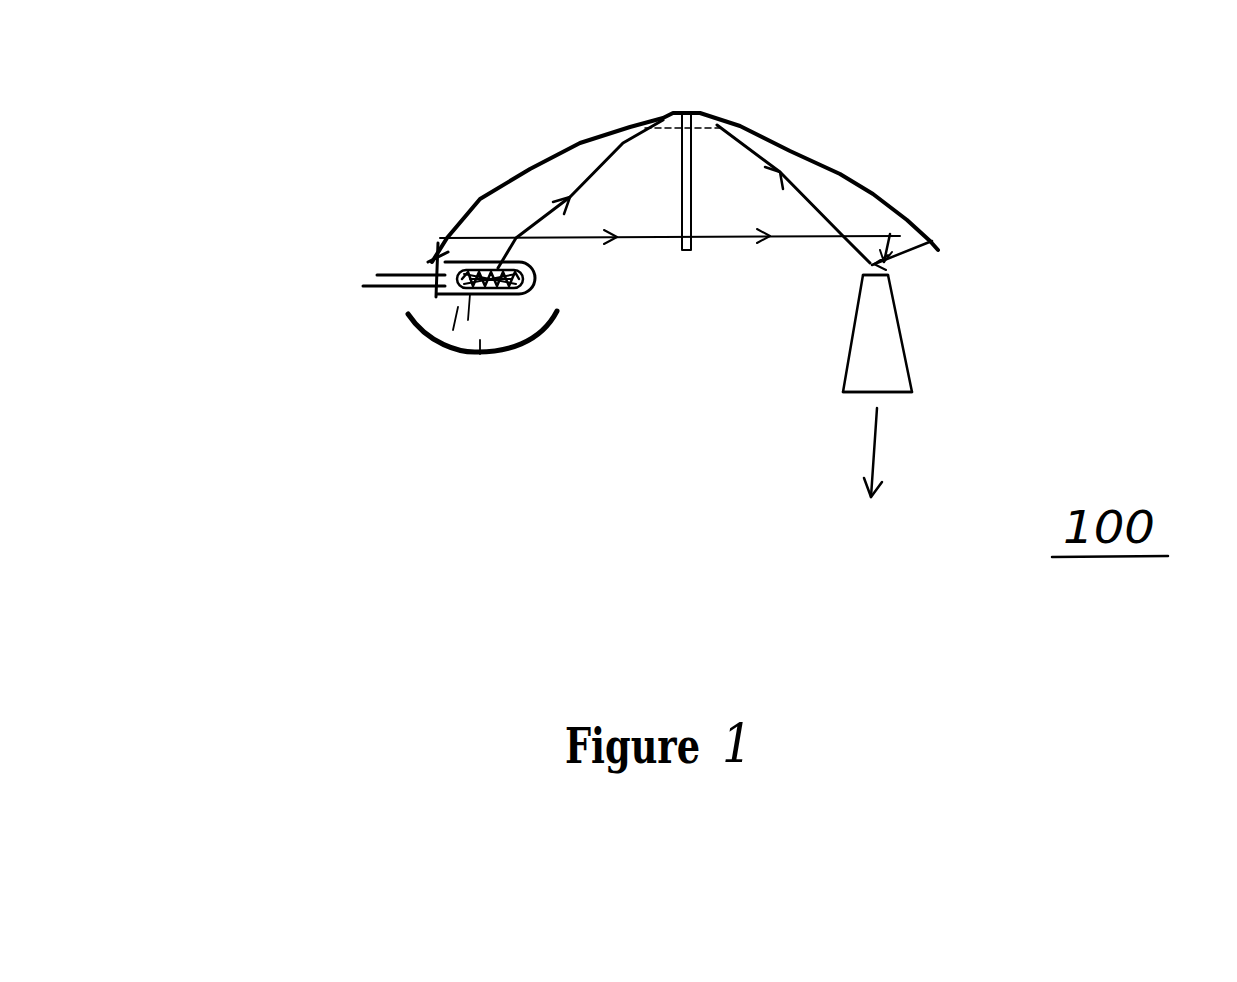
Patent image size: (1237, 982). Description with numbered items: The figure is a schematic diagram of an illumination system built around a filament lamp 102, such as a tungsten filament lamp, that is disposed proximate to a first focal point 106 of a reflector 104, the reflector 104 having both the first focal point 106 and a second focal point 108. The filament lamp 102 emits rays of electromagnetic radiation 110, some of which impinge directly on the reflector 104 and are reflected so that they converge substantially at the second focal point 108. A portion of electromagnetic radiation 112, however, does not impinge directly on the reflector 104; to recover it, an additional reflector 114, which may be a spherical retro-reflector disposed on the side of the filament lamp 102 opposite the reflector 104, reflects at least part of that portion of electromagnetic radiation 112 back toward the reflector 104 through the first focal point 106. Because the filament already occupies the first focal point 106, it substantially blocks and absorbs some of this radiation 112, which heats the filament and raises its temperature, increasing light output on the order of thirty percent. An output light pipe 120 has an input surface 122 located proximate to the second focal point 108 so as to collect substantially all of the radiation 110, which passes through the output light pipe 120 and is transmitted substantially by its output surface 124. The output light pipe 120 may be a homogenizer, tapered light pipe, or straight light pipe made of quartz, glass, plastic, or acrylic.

The filament lamp 102 is at (485, 283).
The reflector 104 is at (763, 106).
The first focal point 106 is at (483, 272).
The second focal point 108 is at (897, 262).
The rays of electromagnetic radiation 110 is at (689, 369).
The portion of electromagnetic radiation 112 is at (530, 312).
The additional reflector 114 is at (420, 343).
The output light pipe 120 is at (905, 345).
The input surface 122 is at (858, 265).
The output surface 124 is at (860, 398).